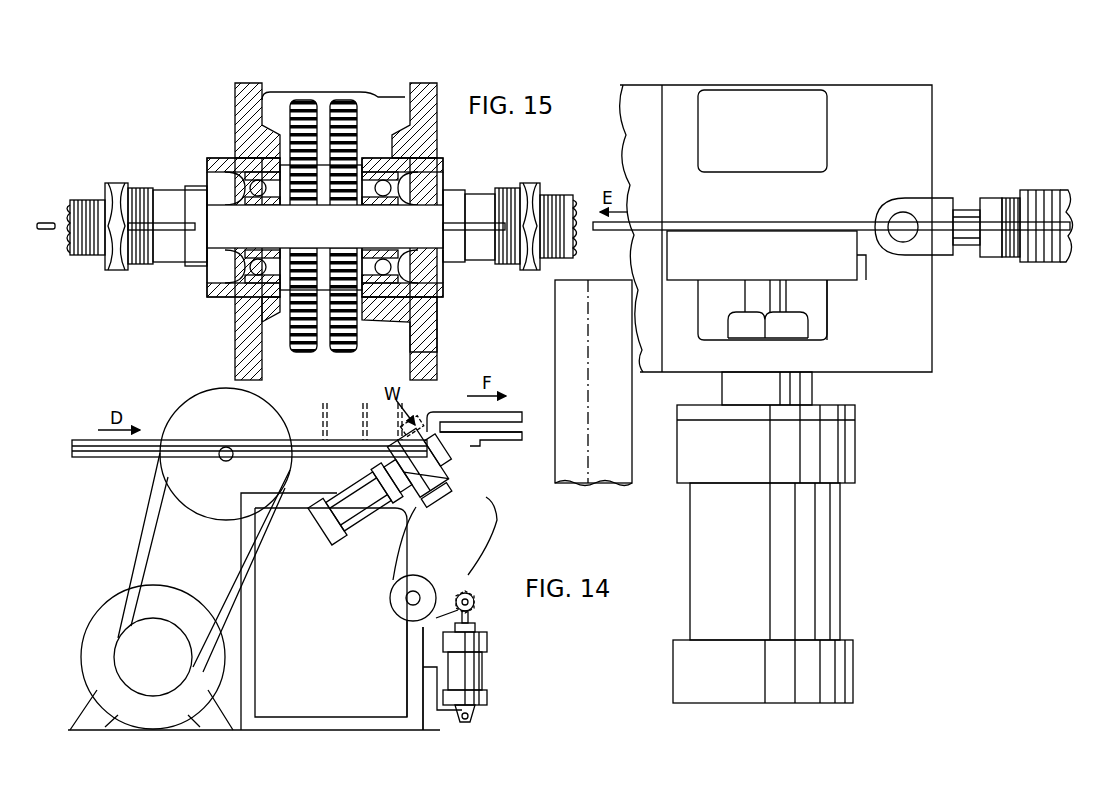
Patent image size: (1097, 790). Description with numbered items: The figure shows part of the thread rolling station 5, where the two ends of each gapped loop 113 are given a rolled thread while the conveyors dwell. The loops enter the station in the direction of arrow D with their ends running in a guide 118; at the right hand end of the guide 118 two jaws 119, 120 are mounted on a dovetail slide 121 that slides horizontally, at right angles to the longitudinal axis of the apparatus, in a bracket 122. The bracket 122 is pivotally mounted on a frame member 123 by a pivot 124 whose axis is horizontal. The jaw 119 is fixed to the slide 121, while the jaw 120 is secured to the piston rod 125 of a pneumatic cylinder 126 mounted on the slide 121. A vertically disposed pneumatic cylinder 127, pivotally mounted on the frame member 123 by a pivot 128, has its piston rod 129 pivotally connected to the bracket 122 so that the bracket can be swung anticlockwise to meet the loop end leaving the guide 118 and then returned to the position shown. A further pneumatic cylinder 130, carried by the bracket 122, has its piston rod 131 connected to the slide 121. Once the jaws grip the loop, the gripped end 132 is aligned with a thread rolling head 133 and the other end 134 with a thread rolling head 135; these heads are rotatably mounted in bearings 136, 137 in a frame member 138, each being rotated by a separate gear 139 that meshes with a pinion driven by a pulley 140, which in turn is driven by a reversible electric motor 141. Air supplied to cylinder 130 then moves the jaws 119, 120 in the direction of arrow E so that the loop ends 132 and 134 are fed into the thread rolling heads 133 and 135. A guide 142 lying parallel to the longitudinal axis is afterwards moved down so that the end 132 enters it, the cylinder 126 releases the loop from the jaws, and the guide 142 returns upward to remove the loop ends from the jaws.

In FIG. 15, the thread rolling station 5 is at (168, 116).
In FIG. 14, the thread rolling station 5 is at (302, 604).
In FIG. 14, the gapped loop 113 is at (364, 403).
In FIG. 14, the guide 118 is at (120, 456).
In FIG. 14, the jaw 119 is at (458, 458).
In FIG. 14, the jaw 120 is at (462, 483).
In FIG. 14, the dovetail slide 121 is at (470, 500).
In FIG. 14, the bracket 122 is at (492, 531).
In FIG. 14, the frame member 123 is at (407, 641).
In FIG. 14, the pivot 124 is at (406, 598).
In FIG. 14, the piston rod 125 is at (425, 500).
In FIG. 14, the pneumatic cylinder 126 is at (336, 526).
In FIG. 14, the pneumatic cylinder 127 is at (487, 668).
In FIG. 14, the pivot 128 is at (476, 716).
In FIG. 14, the piston rod 129 is at (472, 618).
In FIG. 14, the pneumatic cylinder 130 is at (1060, 192).
In FIG. 14, the piston rod 131 is at (967, 210).
In FIG. 14, the gripped end of the loop 132 is at (604, 232).
In FIG. 15, the thread rolling head 133 is at (548, 195).
In FIG. 15, the other end of the loop 134 is at (45, 222).
In FIG. 15, the thread rolling head 135 is at (100, 183).
In FIG. 15, the bearing 136 is at (408, 158).
In FIG. 15, the bearing 137 is at (252, 182).
In FIG. 15, the frame member 138 is at (235, 312).
In FIG. 15, the gear 139 is at (322, 366).
In FIG. 14, the pulley 140 is at (214, 520).
In FIG. 14, the reversible electric motor 141 is at (180, 591).
In FIG. 14, the guide 142 is at (507, 412).